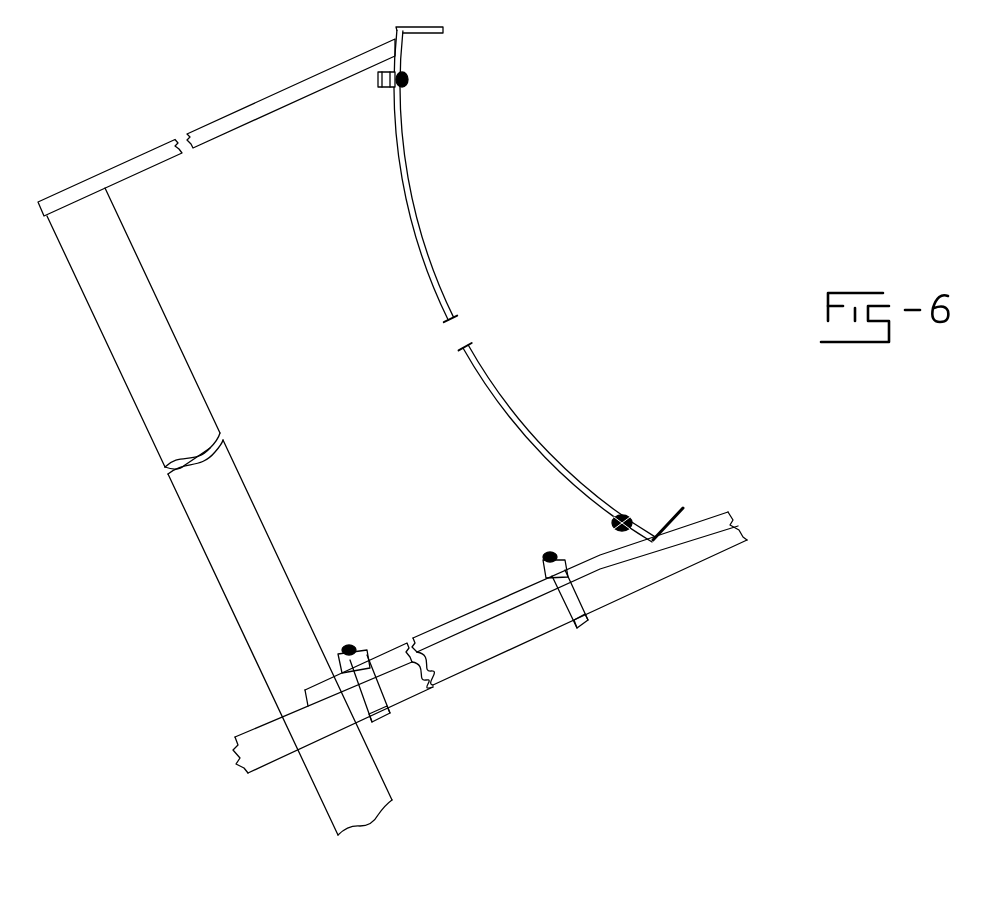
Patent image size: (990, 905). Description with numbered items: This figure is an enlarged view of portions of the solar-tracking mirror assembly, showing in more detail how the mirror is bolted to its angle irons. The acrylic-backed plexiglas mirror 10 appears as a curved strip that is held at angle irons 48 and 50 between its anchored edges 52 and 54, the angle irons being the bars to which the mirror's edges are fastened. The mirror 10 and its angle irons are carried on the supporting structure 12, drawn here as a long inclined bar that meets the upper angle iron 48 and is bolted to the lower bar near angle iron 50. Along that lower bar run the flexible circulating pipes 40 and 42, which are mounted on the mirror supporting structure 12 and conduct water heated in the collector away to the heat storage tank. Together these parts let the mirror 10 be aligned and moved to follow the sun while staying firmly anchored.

The mirror 10 is at (508, 408).
The supporting structure 12 is at (299, 597).
The flexible circulating pipe 40 is at (537, 640).
The flexible circulating pipe 42 is at (521, 609).
The angle iron 48 is at (300, 100).
The angle iron 50 is at (517, 594).
The anchored edge 52 is at (424, 34).
The anchored edge 54 is at (678, 516).